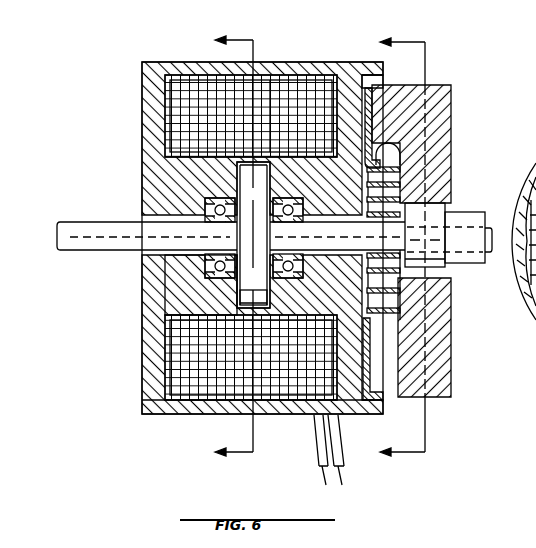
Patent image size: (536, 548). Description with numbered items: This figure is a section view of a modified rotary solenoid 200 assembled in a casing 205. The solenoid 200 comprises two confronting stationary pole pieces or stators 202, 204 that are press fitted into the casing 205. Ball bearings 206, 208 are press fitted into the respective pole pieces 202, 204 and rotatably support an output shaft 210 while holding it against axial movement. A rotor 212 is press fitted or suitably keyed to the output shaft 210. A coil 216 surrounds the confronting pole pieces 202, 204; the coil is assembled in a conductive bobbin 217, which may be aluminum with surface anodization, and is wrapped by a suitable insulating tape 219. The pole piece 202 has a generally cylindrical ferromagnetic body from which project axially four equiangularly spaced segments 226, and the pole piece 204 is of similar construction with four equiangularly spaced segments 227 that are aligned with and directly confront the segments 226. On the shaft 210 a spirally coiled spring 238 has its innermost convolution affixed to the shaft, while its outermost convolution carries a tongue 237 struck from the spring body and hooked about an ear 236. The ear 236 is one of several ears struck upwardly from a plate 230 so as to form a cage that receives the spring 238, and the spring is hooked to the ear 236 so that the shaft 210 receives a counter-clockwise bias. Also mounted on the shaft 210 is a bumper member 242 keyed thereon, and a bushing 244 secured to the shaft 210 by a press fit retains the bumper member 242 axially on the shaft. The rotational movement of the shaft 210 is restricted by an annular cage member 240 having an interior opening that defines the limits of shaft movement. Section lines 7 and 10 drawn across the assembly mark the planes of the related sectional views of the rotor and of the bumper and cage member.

The rotary solenoid 200 is at (186, 58).
The stationary pole piece 202 is at (160, 172).
The stationary pole piece 204 is at (346, 415).
The casing 205 is at (182, 410).
The ball bearing 206 is at (242, 192).
The ball bearing 208 is at (290, 223).
The output shaft 210 is at (56, 252).
The rotor 212 is at (218, 300).
The coil 216 is at (283, 96).
The conductive bobbin 217 is at (167, 116).
The insulating tape 219 is at (326, 72).
The segments 226 is at (168, 318).
The segments 227 is at (285, 290).
The plate 230 is at (380, 396).
The ear 236 is at (380, 178).
The tongue 237 is at (395, 150).
The spirally coiled spring 238 is at (400, 200).
The annular cage member 240 is at (435, 398).
The bumper member 242 is at (452, 300).
The bushing 244 is at (470, 266).
The section line 7- 7 is at (243, 249).
The section line 10- 10 is at (414, 251).